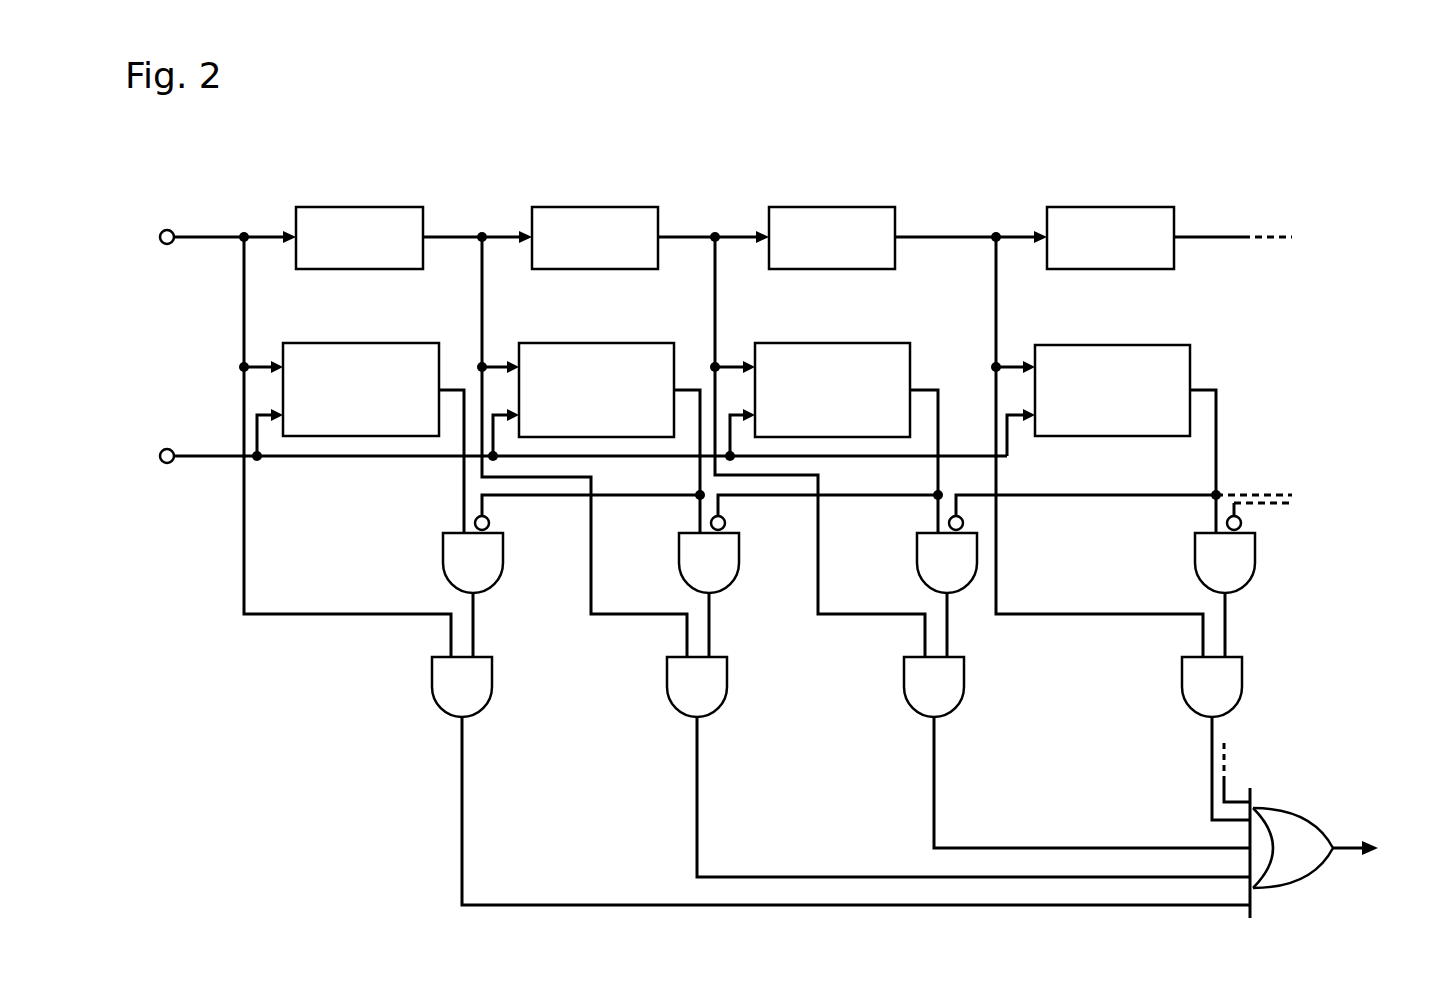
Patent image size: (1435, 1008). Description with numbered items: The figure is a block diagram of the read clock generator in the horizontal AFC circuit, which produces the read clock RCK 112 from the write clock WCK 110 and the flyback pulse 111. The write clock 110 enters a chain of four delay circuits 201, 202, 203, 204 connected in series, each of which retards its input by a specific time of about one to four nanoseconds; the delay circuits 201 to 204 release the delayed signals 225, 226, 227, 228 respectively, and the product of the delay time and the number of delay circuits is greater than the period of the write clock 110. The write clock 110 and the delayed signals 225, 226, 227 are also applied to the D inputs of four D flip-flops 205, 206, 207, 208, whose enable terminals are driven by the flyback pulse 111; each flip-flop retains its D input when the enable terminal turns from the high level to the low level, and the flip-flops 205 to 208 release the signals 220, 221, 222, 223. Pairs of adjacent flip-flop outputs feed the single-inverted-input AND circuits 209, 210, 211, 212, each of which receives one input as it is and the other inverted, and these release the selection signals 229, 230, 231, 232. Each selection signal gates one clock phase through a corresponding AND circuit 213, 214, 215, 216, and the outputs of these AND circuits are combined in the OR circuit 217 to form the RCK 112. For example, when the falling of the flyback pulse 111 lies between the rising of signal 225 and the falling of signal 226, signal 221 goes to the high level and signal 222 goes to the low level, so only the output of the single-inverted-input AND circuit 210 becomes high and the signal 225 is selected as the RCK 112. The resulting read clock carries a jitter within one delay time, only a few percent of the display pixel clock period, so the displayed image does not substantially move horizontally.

The write clock (WCK) 110 is at (152, 187).
The flyback pulse 111 is at (143, 403).
The RCK (read clock) 112 is at (1347, 838).
The delay circuit 201 is at (307, 206).
The delay circuit 202 is at (544, 206).
The delay circuit 203 is at (781, 206).
The delay circuit 204 is at (1058, 206).
The D flip-flop 205 is at (302, 342).
The D flip-flop 206 is at (538, 342).
The D flip-flop 207 is at (773, 342).
The D flip-flop 208 is at (1050, 342).
The single-inverted-input AND circuit 209 is at (503, 548).
The single-inverted-input AND circuit 210 is at (740, 548).
The single-inverted-input AND circuit 211 is at (915, 548).
The single-inverted-input AND circuit 212 is at (1255, 550).
The AND circuit 213 is at (492, 680).
The AND circuit 214 is at (727, 680).
The AND circuit 215 is at (965, 680).
The AND circuit 216 is at (1242, 680).
The OR circuit 217 is at (1282, 812).
The signal 220 is at (456, 383).
The signal 221 is at (692, 383).
The signal 222 is at (928, 383).
The signal 223 is at (1207, 383).
The signal 225 is at (437, 235).
The signal 226 is at (672, 235).
The signal 227 is at (910, 235).
The signal 228 is at (1188, 235).
The signal 229 is at (475, 623).
The signal 230 is at (712, 623).
The signal 231 is at (940, 617).
The signal 232 is at (1228, 625).